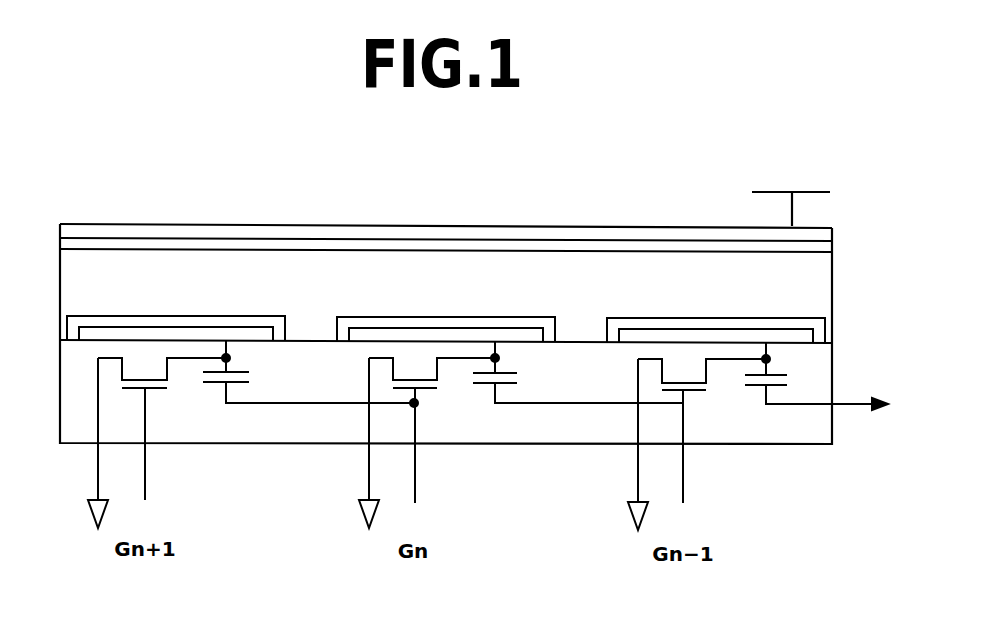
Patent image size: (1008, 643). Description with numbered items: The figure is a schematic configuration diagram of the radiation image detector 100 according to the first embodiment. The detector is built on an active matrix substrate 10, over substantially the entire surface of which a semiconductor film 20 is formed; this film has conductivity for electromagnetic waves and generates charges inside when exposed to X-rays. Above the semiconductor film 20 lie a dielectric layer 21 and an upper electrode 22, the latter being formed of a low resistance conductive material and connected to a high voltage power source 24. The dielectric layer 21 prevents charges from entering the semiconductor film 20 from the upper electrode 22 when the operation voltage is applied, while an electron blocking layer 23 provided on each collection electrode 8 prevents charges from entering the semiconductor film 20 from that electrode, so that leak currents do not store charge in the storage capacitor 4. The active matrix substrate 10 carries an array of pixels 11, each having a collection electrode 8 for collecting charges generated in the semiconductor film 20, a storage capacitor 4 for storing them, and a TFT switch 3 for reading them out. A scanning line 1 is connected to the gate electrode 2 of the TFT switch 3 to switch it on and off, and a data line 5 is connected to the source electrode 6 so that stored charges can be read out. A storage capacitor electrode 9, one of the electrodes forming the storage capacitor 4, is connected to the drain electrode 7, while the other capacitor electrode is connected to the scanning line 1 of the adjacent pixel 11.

The radiation image detector 100 is at (725, 173).
The high voltage power source 24 is at (846, 162).
The upper electrode 22 is at (824, 236).
The dielectric layer 21 is at (824, 247).
The semiconductor film 20 is at (822, 274).
The active matrix substrate 10 is at (824, 353).
The pixel 11 is at (201, 307).
The collection electrode 8 is at (163, 332).
The electron blocking layer 23 is at (120, 320).
The data line 5 is at (96, 463).
The scanning line 1 is at (147, 474).
The TFT switch 3 is at (684, 366).
The source electrode 6 is at (648, 358).
The drain electrode 7 is at (727, 364).
The storage capacitor electrode 9 is at (782, 363).
The gate electrode 2 is at (706, 395).
The storage capacitor 4 is at (780, 392).